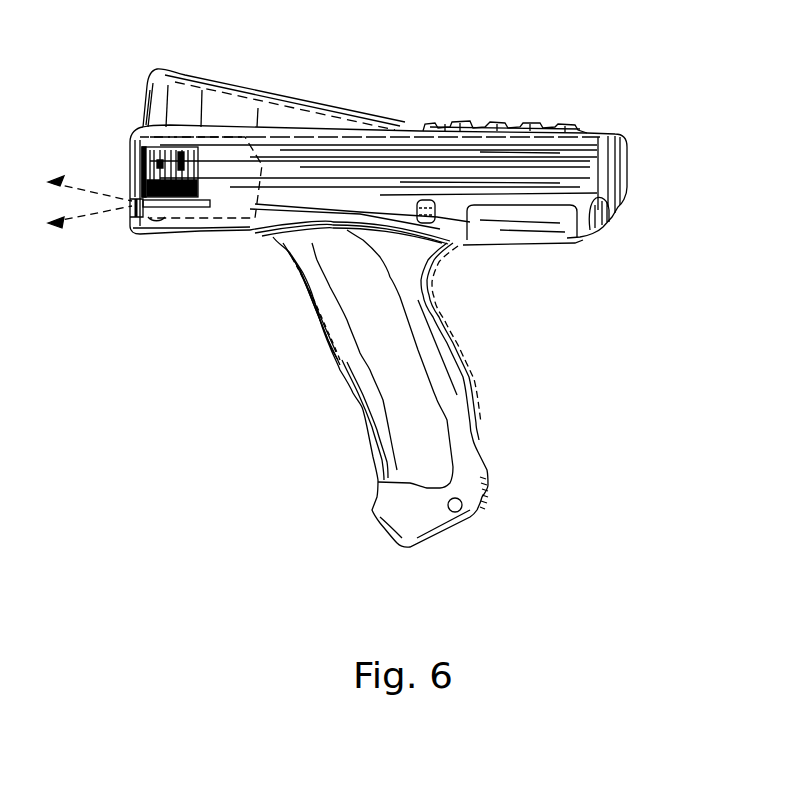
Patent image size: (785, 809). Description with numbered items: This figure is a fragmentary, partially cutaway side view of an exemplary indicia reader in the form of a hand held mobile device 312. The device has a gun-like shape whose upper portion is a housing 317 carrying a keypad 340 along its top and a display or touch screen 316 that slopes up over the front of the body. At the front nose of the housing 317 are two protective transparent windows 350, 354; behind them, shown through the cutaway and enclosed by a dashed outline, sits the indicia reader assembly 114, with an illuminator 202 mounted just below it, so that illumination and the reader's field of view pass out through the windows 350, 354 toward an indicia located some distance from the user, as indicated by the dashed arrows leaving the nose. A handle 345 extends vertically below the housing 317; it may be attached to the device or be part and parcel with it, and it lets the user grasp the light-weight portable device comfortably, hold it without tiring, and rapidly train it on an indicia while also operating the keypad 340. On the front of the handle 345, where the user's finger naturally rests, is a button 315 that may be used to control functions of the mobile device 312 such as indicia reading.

The hand held mobile device 312 is at (388, 281).
The display or touch screen 316 is at (250, 93).
The keypad 340 is at (500, 122).
The housing 317 is at (612, 218).
The protective transparent window 350 is at (128, 166).
The protective transparent window 354 is at (138, 235).
The illuminator 202 is at (187, 208).
The indicia reader assembly 114 is at (205, 158).
The handle 345 is at (470, 374).
The button 315 is at (320, 303).